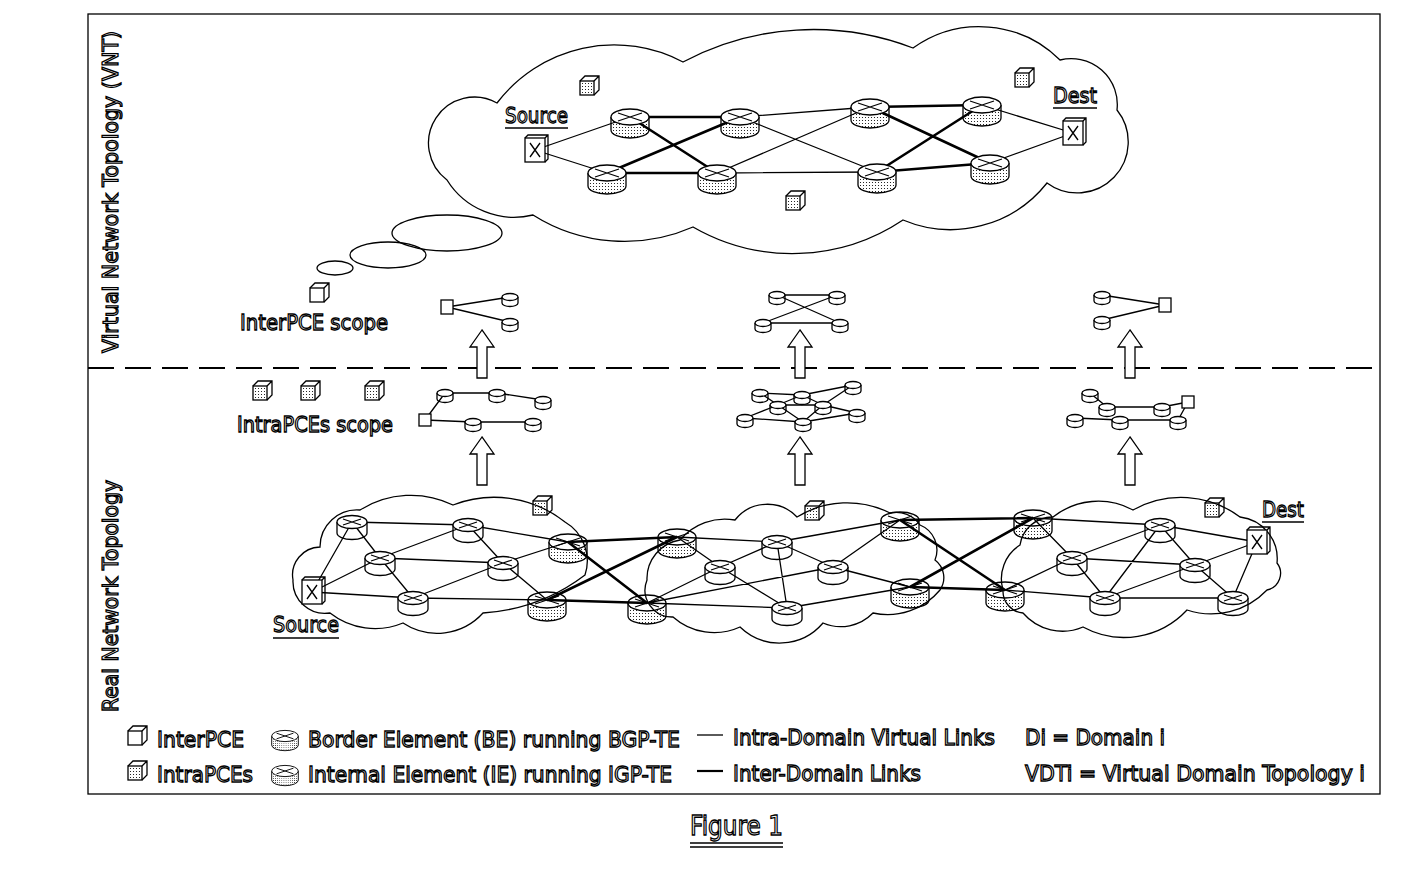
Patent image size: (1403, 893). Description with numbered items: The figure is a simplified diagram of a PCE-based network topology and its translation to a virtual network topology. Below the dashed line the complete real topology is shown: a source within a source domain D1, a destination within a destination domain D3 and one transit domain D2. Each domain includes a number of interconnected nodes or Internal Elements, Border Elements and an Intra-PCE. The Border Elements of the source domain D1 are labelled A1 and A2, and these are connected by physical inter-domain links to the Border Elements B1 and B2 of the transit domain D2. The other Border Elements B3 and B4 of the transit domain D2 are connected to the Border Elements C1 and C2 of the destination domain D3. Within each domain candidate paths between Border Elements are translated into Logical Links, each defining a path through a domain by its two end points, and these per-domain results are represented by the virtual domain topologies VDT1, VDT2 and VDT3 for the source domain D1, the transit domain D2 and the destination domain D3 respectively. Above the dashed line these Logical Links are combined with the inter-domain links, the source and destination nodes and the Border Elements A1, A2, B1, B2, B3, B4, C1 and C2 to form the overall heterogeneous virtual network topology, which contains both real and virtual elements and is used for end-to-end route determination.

The border element A1 is at (600, 318).
The border element A2 is at (577, 404).
The border element B1 is at (701, 314).
The border element B2 is at (666, 399).
The border element B3 is at (902, 302).
The border element B4 is at (910, 398).
The border element C1 is at (1007, 300).
The border element C2 is at (997, 397).
The source domain D1 is at (440, 579).
The transit domain D2 is at (794, 583).
The destination domain D3 is at (1140, 575).
The virtual domain topology 1 VDT1 is at (479, 296).
The virtual domain topology 2 VDT2 is at (801, 296).
The virtual domain topology 3 VDT3 is at (1132, 294).